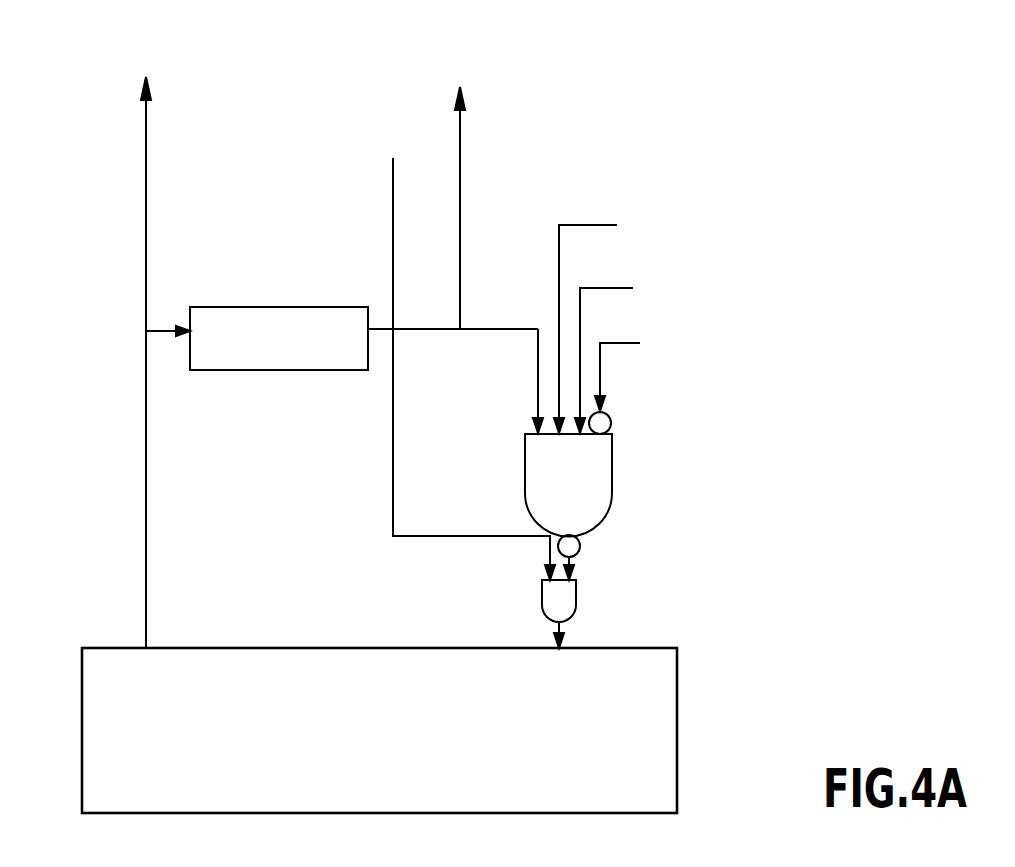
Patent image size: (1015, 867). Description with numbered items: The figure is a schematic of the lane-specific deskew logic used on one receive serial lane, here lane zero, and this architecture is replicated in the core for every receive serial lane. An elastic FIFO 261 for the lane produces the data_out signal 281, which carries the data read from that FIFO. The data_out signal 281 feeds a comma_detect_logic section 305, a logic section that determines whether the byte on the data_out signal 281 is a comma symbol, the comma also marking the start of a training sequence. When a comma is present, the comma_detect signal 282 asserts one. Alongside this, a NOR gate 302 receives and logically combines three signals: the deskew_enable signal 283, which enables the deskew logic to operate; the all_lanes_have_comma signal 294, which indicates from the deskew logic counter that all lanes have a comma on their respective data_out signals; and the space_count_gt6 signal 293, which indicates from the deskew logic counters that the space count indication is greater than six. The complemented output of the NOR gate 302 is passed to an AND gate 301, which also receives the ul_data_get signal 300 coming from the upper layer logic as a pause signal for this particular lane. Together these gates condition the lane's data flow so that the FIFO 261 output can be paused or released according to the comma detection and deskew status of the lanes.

The elastic FIFO 261 is at (678, 720).
The data_out signal 281 is at (148, 230).
The comma_detect signal 282 is at (461, 200).
The deskew_enable signal 283 is at (668, 322).
The space_count_gt6 signal 293 is at (699, 353).
The all_lanes_have_comma signal 294 is at (732, 382).
The ul_data_get signal 300 is at (393, 245).
The AND gate 301 is at (577, 601).
The NOR gate 302 is at (612, 470).
The comma_detect_logic section 305 is at (276, 307).